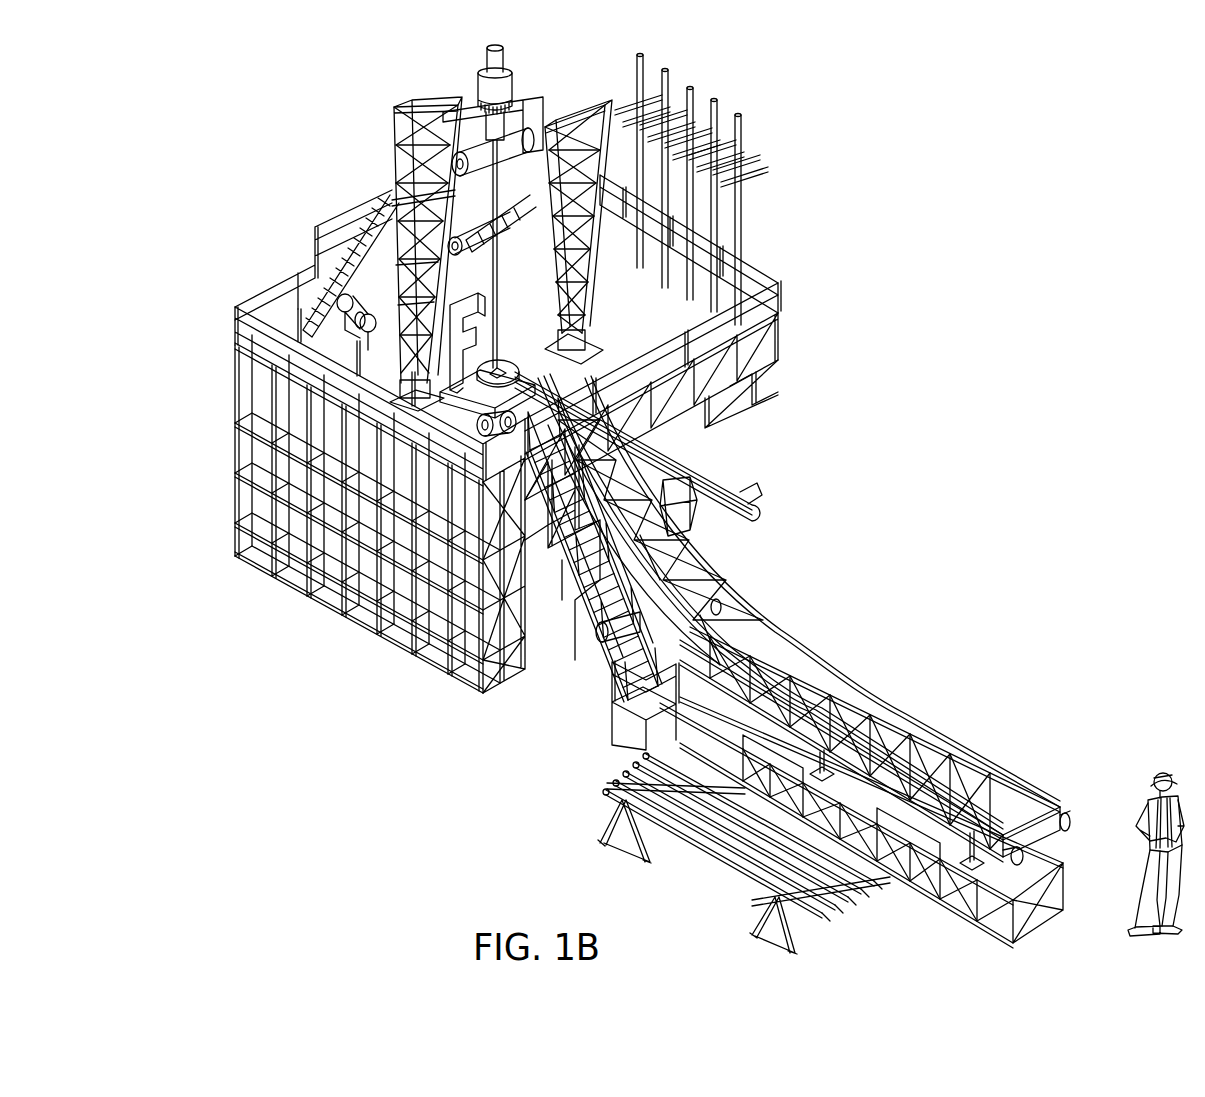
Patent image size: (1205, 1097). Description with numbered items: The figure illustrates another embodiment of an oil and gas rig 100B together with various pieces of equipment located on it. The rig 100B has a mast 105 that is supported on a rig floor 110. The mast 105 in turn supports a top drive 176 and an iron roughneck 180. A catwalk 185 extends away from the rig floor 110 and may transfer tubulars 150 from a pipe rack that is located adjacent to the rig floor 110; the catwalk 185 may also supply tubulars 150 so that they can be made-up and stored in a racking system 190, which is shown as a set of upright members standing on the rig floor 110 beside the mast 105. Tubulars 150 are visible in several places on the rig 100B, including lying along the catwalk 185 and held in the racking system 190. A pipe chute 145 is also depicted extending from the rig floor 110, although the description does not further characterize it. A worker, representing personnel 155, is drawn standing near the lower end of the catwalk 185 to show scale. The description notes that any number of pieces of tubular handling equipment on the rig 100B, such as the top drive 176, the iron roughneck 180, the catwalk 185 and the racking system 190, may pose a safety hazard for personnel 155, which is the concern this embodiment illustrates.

The oil and gas rig 100B is at (233, 271).
The mast 105 is at (289, 241).
The rig floor 110 is at (778, 344).
The pipe chute 145 is at (540, 372).
The tubulars 150 is at (373, 154).
The personnel 155 is at (1163, 770).
The top drive 176 is at (519, 93).
The iron roughneck 180 is at (455, 375).
The catwalk 185 is at (795, 600).
The racking system 190 is at (770, 126).